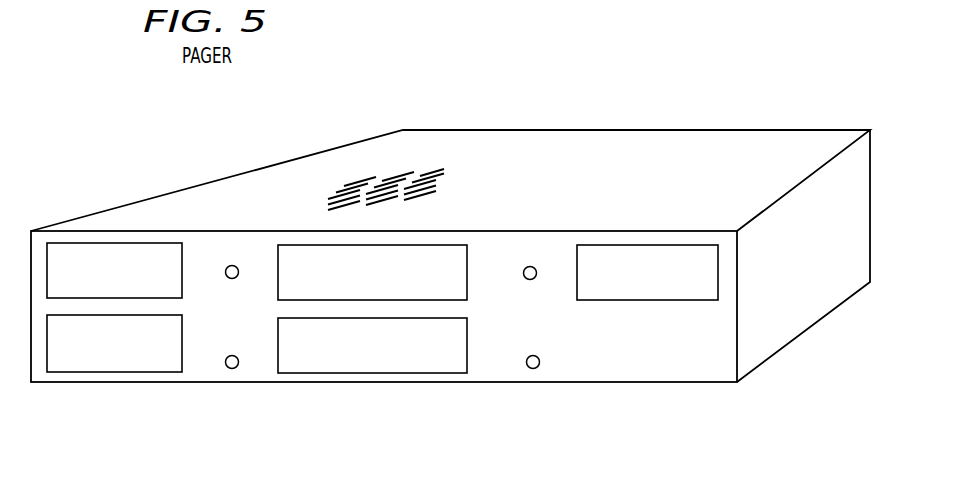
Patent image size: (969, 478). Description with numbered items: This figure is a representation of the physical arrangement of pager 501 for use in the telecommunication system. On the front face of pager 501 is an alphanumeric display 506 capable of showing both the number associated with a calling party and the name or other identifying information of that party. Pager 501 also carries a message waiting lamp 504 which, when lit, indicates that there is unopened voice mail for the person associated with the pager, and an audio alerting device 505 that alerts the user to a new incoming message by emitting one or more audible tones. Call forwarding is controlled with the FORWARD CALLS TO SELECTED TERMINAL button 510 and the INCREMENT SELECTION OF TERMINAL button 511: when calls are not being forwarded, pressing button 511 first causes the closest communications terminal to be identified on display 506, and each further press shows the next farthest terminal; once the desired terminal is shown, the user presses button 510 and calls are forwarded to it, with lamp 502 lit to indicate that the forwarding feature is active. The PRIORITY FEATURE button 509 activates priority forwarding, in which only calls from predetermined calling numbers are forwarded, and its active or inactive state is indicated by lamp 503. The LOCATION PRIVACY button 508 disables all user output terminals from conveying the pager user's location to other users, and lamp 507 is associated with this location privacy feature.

The pager 501 is at (763, 342).
The lamp 502 is at (230, 278).
The lamp 503 is at (231, 368).
The message waiting lamp 504 is at (533, 368).
The audio alerting device 505 is at (434, 152).
The alphanumeric display 506 is at (132, 245).
The lamp 507 is at (527, 279).
The LOCATION PRIVACY button 508 is at (680, 244).
The PRIORITY FEATURE button 509 is at (88, 372).
The FORWARD CALLS TO SELECTED TERMINAL button 510 is at (309, 244).
The INCREMENT SELECTION OF TERMINAL button 511 is at (332, 373).